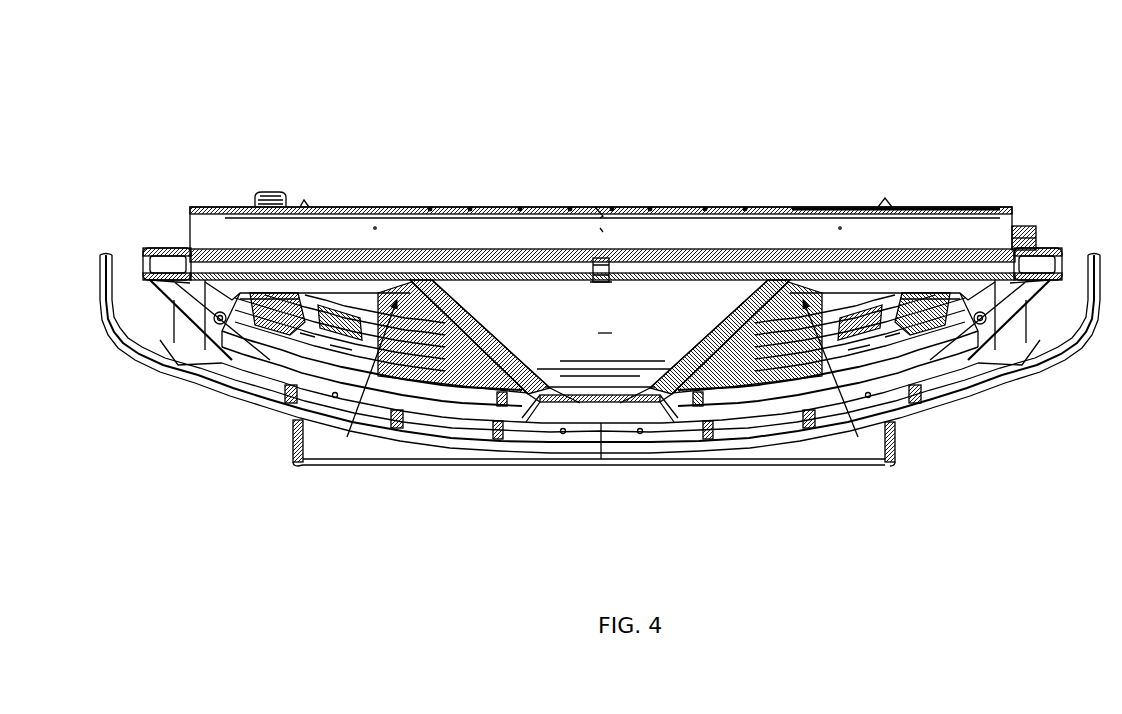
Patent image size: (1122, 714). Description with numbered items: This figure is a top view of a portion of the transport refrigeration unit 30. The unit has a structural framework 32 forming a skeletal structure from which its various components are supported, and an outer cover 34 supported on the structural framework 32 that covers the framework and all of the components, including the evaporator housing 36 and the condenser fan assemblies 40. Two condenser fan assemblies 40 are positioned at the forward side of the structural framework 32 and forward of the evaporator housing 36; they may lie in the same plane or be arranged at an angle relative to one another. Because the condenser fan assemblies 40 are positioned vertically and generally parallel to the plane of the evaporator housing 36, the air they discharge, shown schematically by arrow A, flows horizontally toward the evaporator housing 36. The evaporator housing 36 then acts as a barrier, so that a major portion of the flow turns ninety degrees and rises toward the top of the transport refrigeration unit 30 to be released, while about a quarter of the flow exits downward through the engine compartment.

The transport refrigeration unit 30 is at (190, 63).
The structural framework 32 is at (1056, 207).
The outer cover 34 is at (195, 380).
The evaporator housing 36 is at (500, 300).
The condenser fan assembly 40 is at (307, 343).